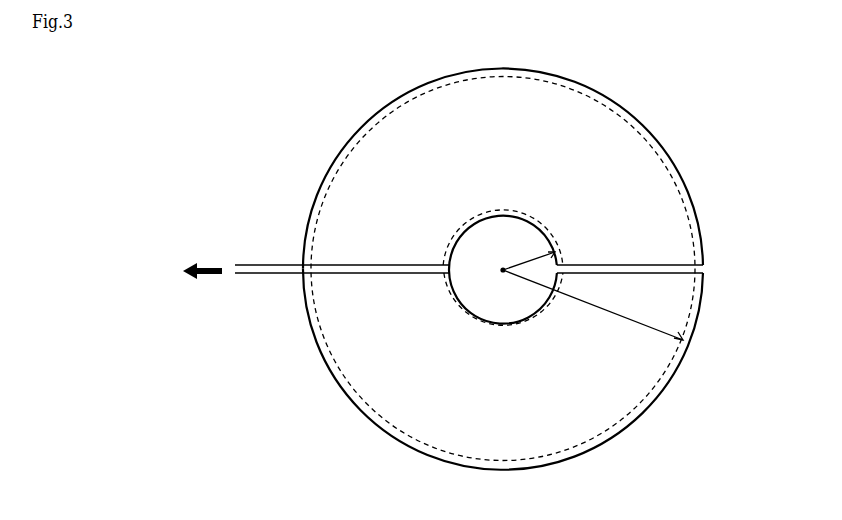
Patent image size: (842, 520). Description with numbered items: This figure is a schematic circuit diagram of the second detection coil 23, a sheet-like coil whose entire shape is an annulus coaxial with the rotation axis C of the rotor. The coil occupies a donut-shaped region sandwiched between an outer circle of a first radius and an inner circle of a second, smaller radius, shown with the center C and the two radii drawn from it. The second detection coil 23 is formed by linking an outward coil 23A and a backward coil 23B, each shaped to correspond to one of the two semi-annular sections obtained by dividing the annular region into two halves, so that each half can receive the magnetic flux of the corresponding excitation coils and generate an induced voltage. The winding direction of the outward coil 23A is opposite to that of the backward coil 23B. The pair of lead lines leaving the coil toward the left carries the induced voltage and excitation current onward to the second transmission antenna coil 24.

The second detection coil 23 is at (497, 268).
The outward coil 23A is at (685, 180).
The backward coil 23B is at (665, 390).
The second transmission antenna coil 24 is at (199, 249).